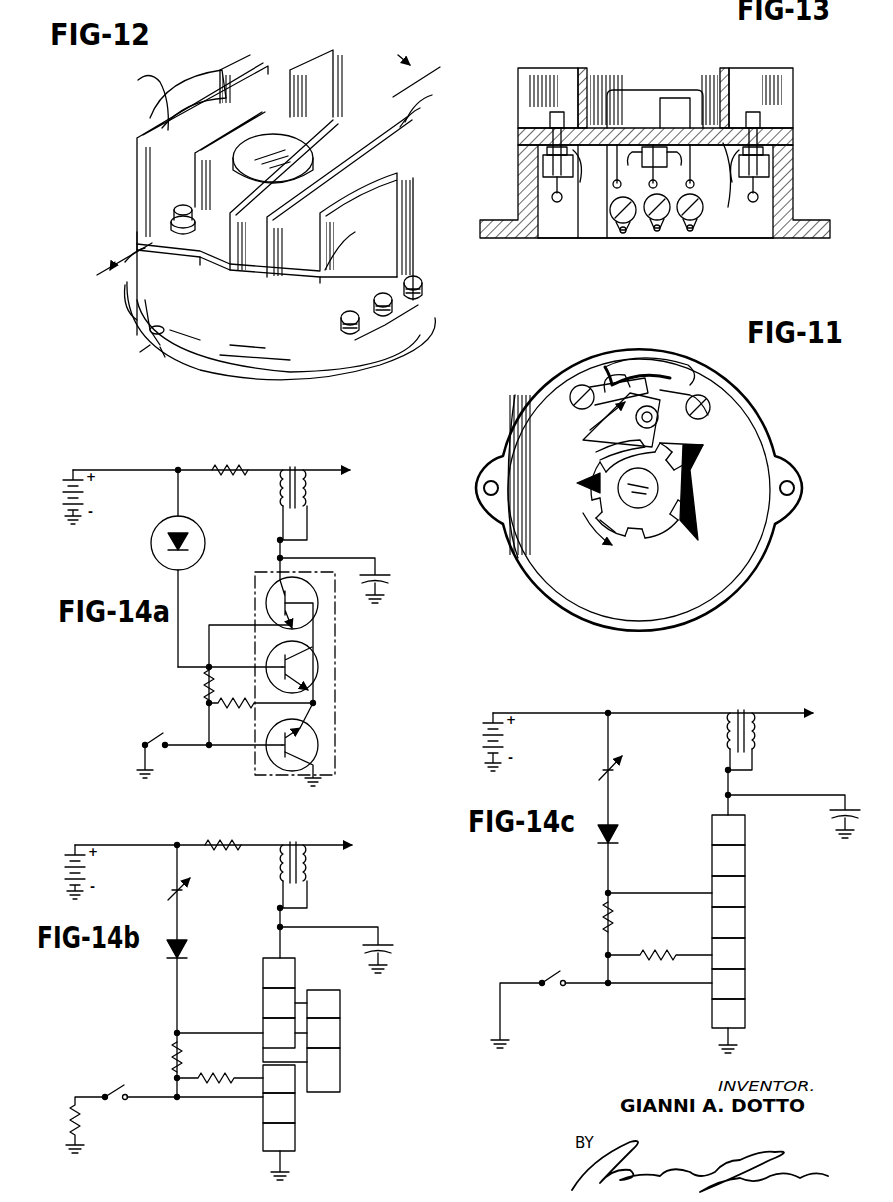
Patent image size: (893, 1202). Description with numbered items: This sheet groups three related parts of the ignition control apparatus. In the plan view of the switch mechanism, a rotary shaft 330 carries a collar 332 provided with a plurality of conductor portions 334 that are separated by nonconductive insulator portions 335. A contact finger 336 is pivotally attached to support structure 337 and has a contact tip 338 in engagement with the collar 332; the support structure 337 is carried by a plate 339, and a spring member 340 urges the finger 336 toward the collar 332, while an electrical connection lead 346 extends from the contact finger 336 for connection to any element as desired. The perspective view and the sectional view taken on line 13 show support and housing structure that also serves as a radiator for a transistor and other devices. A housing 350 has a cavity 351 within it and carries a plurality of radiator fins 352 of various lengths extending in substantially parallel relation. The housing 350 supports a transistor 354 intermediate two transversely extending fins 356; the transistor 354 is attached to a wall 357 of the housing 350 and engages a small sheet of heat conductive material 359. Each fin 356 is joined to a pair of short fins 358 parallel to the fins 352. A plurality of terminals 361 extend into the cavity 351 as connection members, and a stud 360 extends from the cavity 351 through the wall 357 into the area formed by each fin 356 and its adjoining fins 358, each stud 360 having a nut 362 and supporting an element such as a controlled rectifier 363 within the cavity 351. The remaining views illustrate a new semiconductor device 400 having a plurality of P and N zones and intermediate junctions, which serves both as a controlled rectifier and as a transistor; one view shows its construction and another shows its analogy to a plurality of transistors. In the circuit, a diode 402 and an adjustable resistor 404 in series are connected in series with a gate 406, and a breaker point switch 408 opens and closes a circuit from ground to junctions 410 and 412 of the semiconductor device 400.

In FIG. 12, the section line 13 is at (255, 165).
In FIG. 11, the rotary shaft 330 is at (652, 491).
In FIG. 11, the collar 332 is at (636, 520).
In FIG. 11, the conductor portions 334 is at (578, 484).
In FIG. 11, the insulator portions 335 is at (670, 528).
In FIG. 11, the contact finger 336 is at (605, 415).
In FIG. 11, the support structure 337 is at (690, 395).
In FIG. 11, the contact tip 338 is at (600, 453).
In FIG. 11, the plate 339 is at (578, 558).
In FIG. 11, the spring member 340 is at (648, 380).
In FIG. 11, the electrical connection lead 346 is at (672, 362).
In FIG. 12, the housing 350 is at (125, 315).
In FIG. 13, the housing 350 is at (513, 196).
In FIG. 13, the cavity 351 is at (568, 232).
In FIG. 12, the radiator fins 352 is at (135, 83).
In FIG. 13, the radiator fins 352 is at (618, 70).
In FIG. 12, the transistor 354 is at (270, 150).
In FIG. 13, the transistor 354 is at (667, 98).
In FIG. 12, the transversely extending fins 356 is at (135, 195).
In FIG. 13, the transversely extending fins 356 is at (583, 68).
In FIG. 13, the wall 357 is at (729, 185).
In FIG. 12, the short fins 358 is at (163, 170).
In FIG. 13, the short fins 358 is at (527, 82).
In FIG. 13, the sheet of heat conductive material 359 is at (637, 122).
In FIG. 12, the stud 360 is at (160, 213).
In FIG. 13, the stud 360 is at (548, 118).
In FIG. 12, the terminals 361 is at (415, 310).
In FIG. 13, the terminals 361 is at (690, 231).
In FIG. 12, the nut 362 is at (165, 230).
In FIG. 13, the nut 362 is at (545, 128).
In FIG. 13, the controlled rectifier 363 is at (543, 165).
In FIG. 14A, the semiconductor device 400 is at (340, 662).
In FIG. 14B, the semiconductor device 400 is at (347, 1058).
In FIG. 14C, the semiconductor device 400 is at (755, 912).
In FIG. 14A, the diode 402 is at (190, 542).
In FIG. 14B, the diode 402 is at (190, 948).
In FIG. 14C, the diode 402 is at (620, 838).
In FIG. 14A, the adjustable resistor 404 is at (163, 526).
In FIG. 14B, the adjustable resistor 404 is at (190, 895).
In FIG. 14C, the adjustable resistor 404 is at (628, 774).
In FIG. 14B, the gate 406 is at (253, 1025).
In FIG. 14C, the gate 406 is at (707, 888).
In FIG. 14B, the breaker point switch 408 is at (118, 1085).
In FIG. 14C, the breaker point switch 408 is at (550, 975).
In FIG. 14B, the junction 410 is at (256, 1072).
In FIG. 14C, the junction 410 is at (707, 945).
In FIG. 14B, the junction 412 is at (255, 1103).
In FIG. 14C, the junction 412 is at (707, 988).